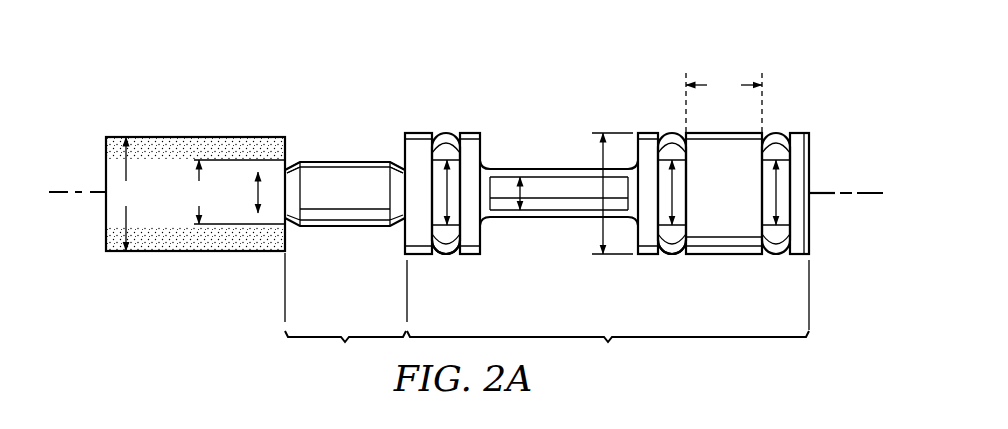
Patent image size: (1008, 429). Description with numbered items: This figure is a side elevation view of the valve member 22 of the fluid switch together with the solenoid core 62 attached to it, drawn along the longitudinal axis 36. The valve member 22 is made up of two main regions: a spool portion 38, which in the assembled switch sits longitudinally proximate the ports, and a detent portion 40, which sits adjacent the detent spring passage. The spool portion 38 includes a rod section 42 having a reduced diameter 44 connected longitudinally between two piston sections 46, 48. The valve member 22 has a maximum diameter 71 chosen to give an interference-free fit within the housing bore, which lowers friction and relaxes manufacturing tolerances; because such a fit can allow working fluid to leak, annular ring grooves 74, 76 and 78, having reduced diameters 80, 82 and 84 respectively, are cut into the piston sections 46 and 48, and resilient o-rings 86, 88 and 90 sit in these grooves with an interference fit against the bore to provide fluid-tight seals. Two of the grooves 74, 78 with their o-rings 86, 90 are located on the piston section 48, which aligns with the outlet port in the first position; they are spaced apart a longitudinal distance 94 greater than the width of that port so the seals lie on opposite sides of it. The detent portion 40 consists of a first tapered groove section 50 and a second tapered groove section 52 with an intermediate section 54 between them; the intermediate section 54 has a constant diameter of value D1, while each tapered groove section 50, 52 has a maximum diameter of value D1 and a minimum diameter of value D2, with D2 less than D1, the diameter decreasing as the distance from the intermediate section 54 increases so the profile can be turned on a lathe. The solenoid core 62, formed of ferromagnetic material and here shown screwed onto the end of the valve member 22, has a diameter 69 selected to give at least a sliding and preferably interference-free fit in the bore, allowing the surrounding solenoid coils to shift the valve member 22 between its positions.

The valve member 22 is at (826, 241).
The longitudinal axis 36 is at (820, 190).
The spool portion 38 is at (608, 316).
The detent portion 40 is at (346, 313).
The rod section 42 is at (533, 169).
The reduced diameter 44 is at (528, 195).
The piston section 46 is at (418, 133).
The piston section 48 is at (723, 256).
The first tapered groove section 50 is at (398, 162).
The second tapered groove section 52 is at (290, 163).
The intermediate section 54 is at (330, 227).
The solenoid core 62 is at (146, 137).
The diameter of solenoid core 69 is at (125, 194).
The maximum diameter 71 is at (600, 158).
The annular ring groove 74 is at (787, 133).
The annular ring groove 76 is at (452, 257).
The annular ring groove 78 is at (663, 133).
The reduced diameter 80 is at (770, 202).
The reduced diameter 82 is at (448, 203).
The reduced diameter 84 is at (677, 187).
The o-ring 86 is at (777, 256).
The o-ring 88 is at (448, 132).
The o-ring 90 is at (670, 255).
The distance 94 is at (724, 102).
The diameter value D1 is at (198, 192).
The diameter value D2 is at (254, 195).